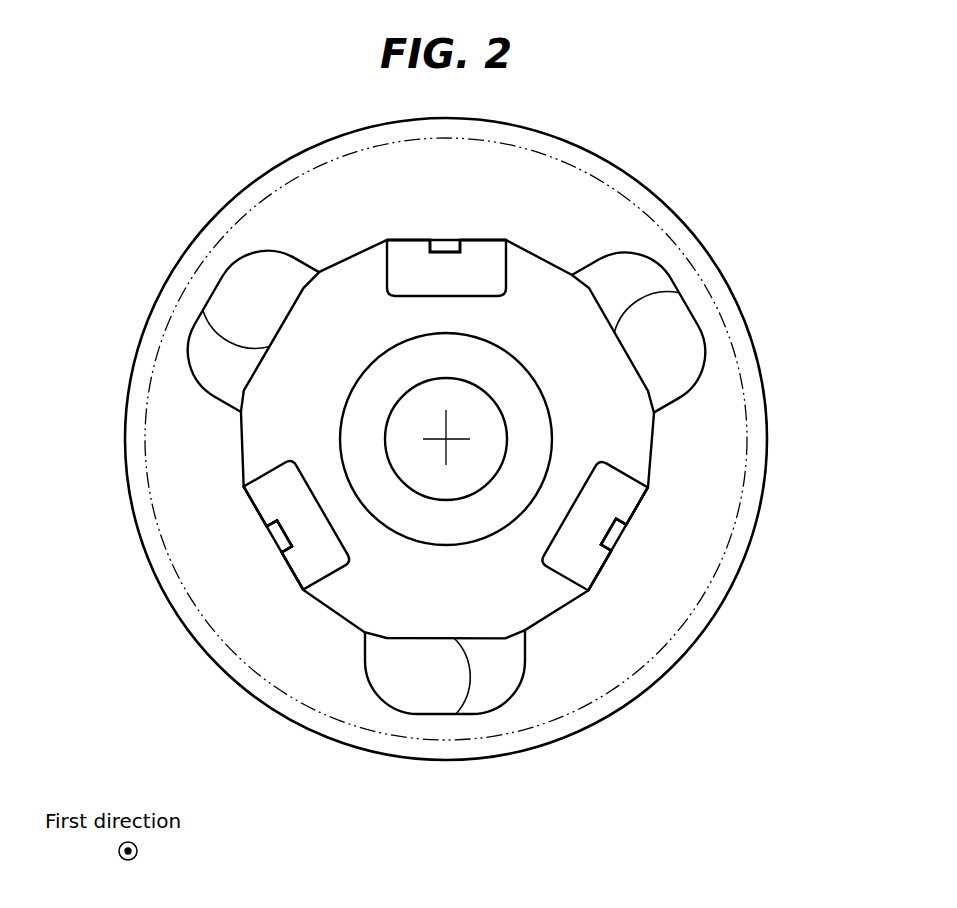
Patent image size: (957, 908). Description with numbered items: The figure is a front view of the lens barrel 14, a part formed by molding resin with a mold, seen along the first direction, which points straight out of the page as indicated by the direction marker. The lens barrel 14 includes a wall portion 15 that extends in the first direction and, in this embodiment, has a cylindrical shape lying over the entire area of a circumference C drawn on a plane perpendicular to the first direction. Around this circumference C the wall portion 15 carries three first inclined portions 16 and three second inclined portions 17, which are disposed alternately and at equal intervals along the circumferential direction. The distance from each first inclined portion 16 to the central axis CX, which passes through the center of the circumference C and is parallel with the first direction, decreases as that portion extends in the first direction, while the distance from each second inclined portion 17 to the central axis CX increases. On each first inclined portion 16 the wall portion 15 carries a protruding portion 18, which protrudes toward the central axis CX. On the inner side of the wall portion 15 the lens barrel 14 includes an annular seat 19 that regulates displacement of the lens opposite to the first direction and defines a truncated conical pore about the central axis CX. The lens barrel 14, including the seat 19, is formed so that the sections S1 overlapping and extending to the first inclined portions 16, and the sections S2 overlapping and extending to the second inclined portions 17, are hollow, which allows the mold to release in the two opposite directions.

The lens barrel 14 is at (740, 569).
The wall portion 15 is at (657, 612).
The first inclined portion 16 is at (483, 240).
The second inclined portion 17 is at (456, 714).
The protruding portion 18 is at (449, 245).
The seat 19 is at (314, 364).
The circumference C is at (747, 412).
The central axis CX is at (446, 439).
The section S1 is at (399, 285).
The section S2 is at (248, 301).